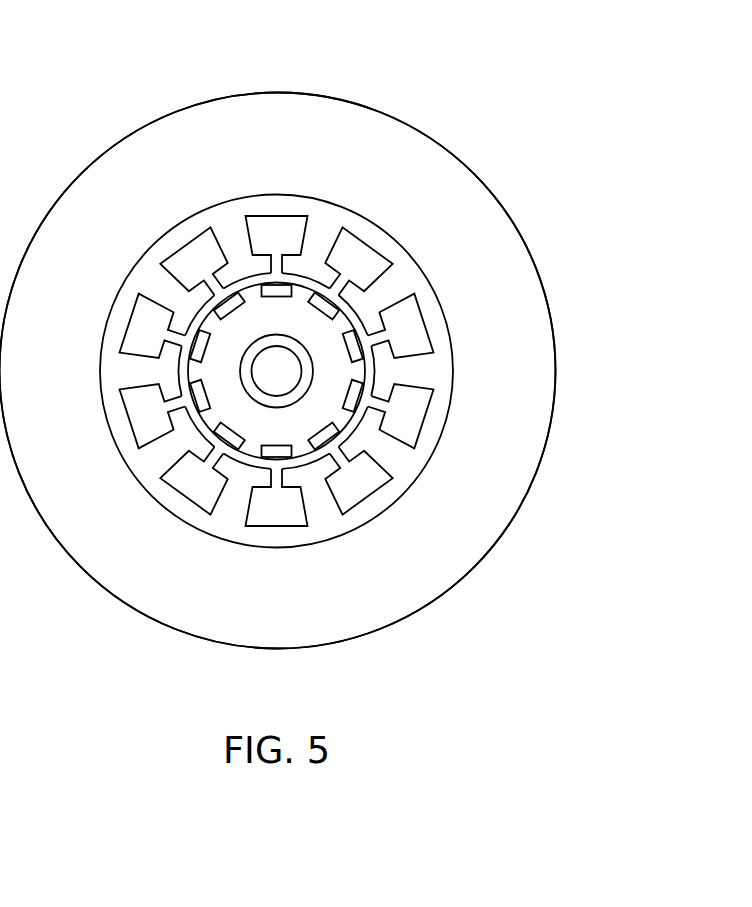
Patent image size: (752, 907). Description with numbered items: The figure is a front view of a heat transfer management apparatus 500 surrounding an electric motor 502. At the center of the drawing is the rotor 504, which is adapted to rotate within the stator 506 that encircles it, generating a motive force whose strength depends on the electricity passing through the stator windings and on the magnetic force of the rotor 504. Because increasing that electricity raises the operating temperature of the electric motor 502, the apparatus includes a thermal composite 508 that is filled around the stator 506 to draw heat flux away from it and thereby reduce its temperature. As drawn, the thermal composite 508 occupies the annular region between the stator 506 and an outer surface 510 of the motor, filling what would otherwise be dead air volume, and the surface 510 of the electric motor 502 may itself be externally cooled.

The heat transfer management apparatus 500 is at (593, 79).
The electric motor 502 is at (292, 371).
The rotor 504 is at (207, 335).
The stator 506 is at (437, 421).
The thermal composite 508 is at (470, 550).
The surface 510 is at (93, 580).